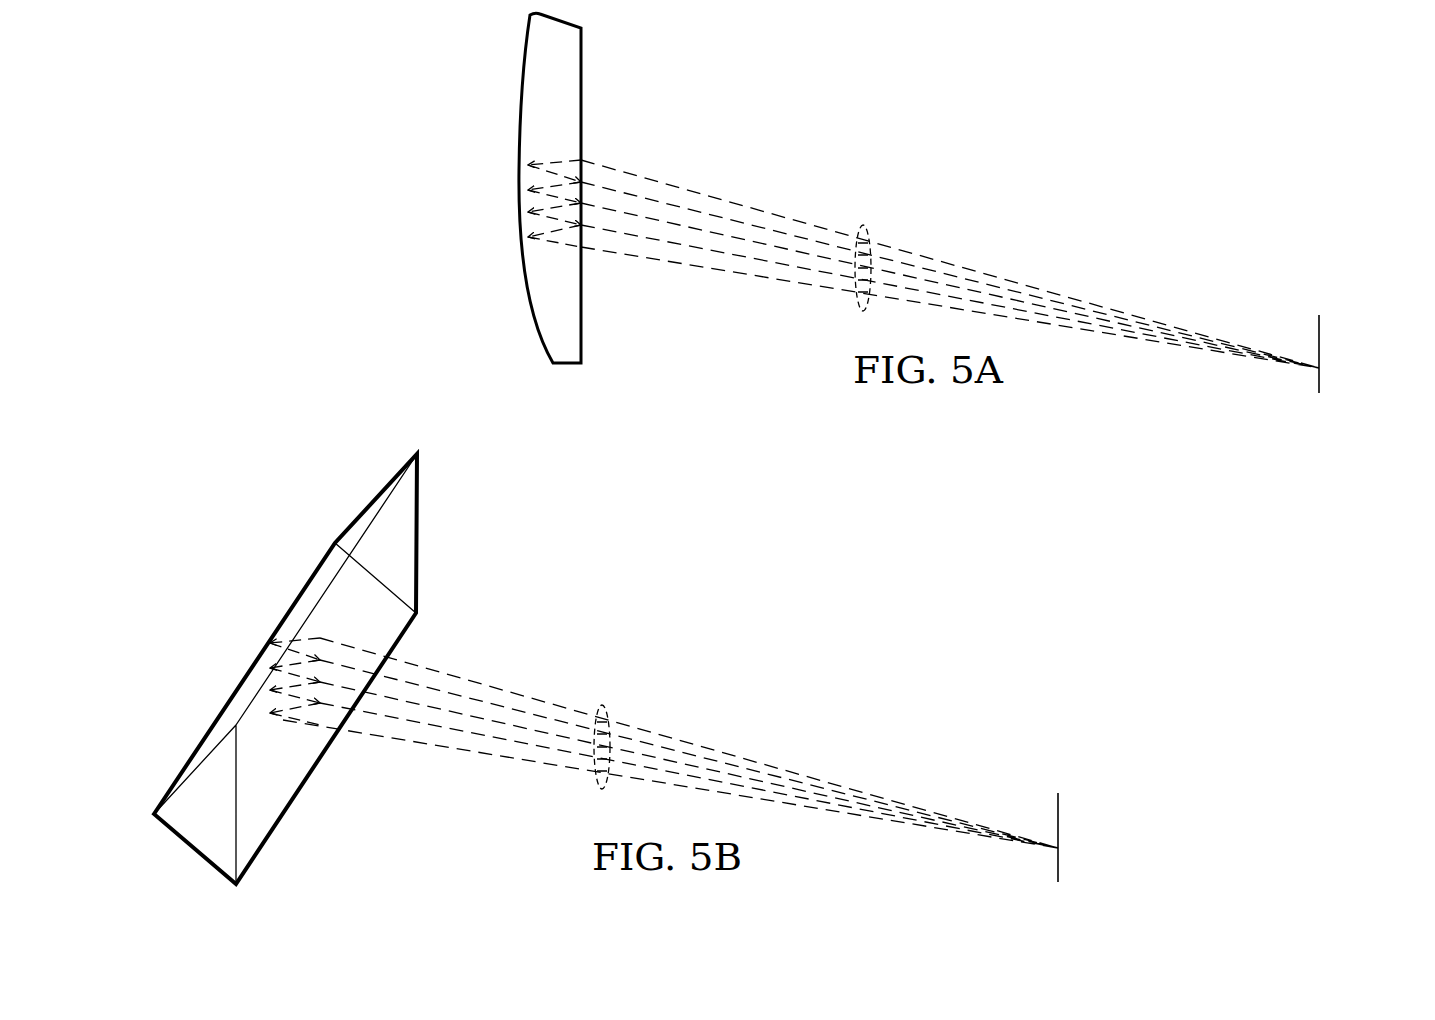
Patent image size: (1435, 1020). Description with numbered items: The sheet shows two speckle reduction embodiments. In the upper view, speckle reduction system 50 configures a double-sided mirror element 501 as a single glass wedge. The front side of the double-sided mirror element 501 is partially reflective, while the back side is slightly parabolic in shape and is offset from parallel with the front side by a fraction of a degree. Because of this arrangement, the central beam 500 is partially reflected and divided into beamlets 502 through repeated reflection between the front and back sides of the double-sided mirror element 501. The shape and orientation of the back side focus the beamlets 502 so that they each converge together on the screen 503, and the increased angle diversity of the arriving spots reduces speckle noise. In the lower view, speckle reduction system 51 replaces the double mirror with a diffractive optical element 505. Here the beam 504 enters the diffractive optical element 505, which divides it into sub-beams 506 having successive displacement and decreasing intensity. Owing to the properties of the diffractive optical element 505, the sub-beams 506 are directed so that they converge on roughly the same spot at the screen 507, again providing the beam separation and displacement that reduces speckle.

In FIG. 5A, the speckle reduction system 50 is at (1028, 142).
In FIG. 5A, the central beam 500 is at (593, 152).
In FIG. 5A, the double-sided mirror element 501 is at (519, 122).
In FIG. 5A, the beamlets 502 is at (863, 228).
In FIG. 5A, the screen 503 is at (1319, 356).
In FIG. 5B, the speckle reduction system 51 is at (765, 620).
In FIG. 5B, the beam 504 is at (400, 651).
In FIG. 5B, the diffractive optical element 505 is at (288, 617).
In FIG. 5B, the sub-beams 506 is at (602, 706).
In FIG. 5B, the screen 507 is at (1058, 833).